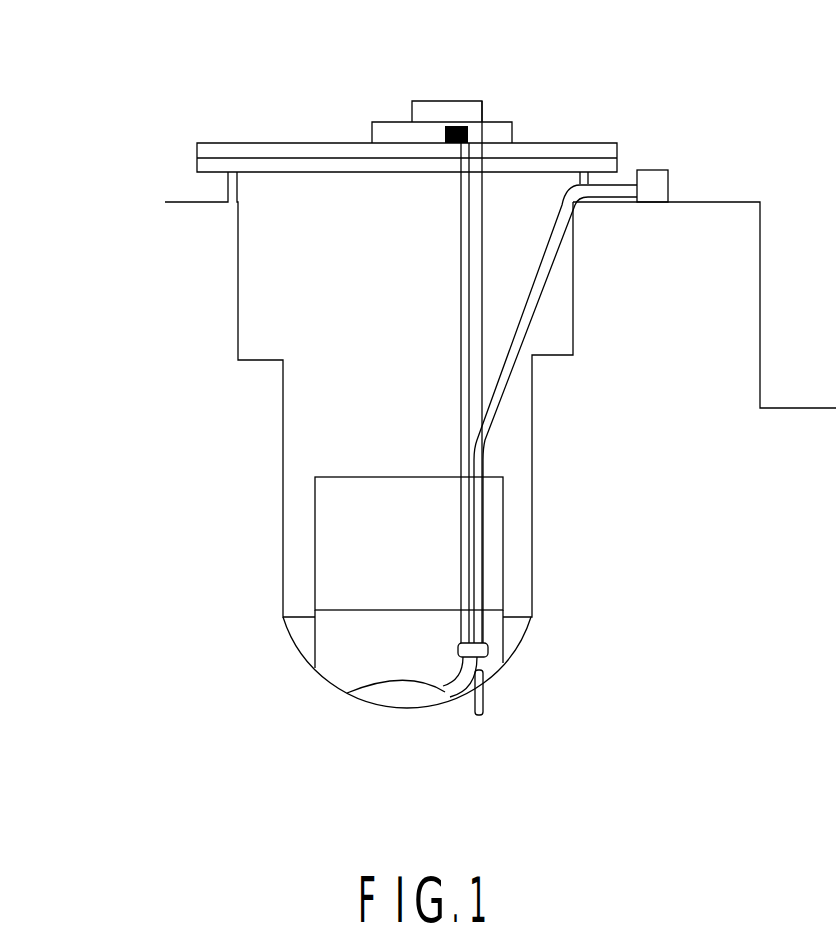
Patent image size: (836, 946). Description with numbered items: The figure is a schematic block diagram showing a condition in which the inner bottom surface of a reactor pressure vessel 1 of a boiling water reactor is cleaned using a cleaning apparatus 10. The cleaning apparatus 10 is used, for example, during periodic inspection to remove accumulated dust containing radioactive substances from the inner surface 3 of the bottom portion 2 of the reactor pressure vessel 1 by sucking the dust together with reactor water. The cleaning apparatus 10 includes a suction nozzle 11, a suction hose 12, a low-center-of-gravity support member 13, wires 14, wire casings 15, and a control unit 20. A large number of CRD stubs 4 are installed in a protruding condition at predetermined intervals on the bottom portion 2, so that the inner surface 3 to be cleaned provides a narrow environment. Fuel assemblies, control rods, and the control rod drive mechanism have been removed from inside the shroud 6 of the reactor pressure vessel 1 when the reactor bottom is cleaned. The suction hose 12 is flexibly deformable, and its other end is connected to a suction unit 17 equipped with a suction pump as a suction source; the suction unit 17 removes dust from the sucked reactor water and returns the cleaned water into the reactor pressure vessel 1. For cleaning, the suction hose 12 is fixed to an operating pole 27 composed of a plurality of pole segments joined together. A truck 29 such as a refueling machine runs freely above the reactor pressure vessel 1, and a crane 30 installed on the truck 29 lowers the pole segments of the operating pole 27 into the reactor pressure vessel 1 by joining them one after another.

The reactor pressure vessel 1 is at (238, 282).
The bottom portion 2 is at (427, 708).
The inner surface 3 is at (385, 701).
The CRD stub 4 is at (484, 692).
The shroud 6 is at (503, 537).
The cleaning apparatus 10 is at (636, 442).
The suction nozzle 11 is at (347, 693).
The suction hose 12 is at (533, 308).
The low-center-of-gravity support member 13 is at (488, 651).
The wire 14 is at (461, 360).
The wire casing 15 is at (251, 393).
The suction unit 17 is at (660, 180).
The control unit 20 is at (443, 133).
The operating pole 27 is at (486, 224).
The truck 29 is at (512, 131).
The crane 30 is at (468, 101).